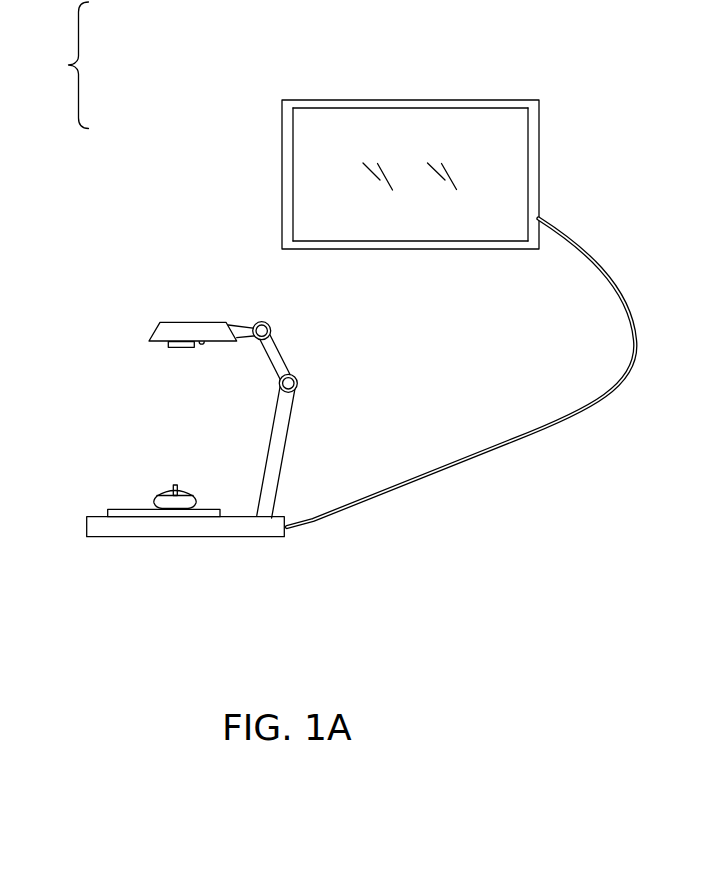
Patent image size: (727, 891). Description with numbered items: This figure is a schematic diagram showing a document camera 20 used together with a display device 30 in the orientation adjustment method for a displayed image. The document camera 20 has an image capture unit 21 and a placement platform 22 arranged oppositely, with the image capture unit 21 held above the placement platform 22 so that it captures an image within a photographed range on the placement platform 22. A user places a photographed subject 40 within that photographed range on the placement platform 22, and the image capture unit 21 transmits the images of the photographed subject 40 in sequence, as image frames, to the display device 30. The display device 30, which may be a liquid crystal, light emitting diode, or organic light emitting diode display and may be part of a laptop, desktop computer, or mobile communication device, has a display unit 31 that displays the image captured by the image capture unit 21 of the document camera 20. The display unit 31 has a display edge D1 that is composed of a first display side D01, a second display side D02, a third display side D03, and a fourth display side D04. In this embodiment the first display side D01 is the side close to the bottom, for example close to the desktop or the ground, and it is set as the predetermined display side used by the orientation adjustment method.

The document camera 20 is at (192, 388).
The image capture unit 21 is at (174, 348).
The placement platform 22 is at (122, 512).
The display device 30 is at (296, 86).
The display unit 31 is at (505, 138).
The photographed subject 40 is at (186, 490).
The display edge D1 is at (59, 65).
The first display side D01 is at (412, 242).
The second display side D02 is at (529, 174).
The third display side D03 is at (406, 109).
The fourth display side D04 is at (292, 174).